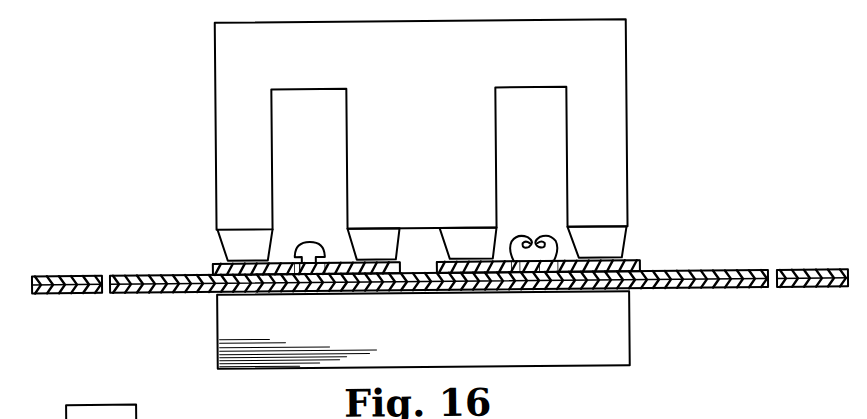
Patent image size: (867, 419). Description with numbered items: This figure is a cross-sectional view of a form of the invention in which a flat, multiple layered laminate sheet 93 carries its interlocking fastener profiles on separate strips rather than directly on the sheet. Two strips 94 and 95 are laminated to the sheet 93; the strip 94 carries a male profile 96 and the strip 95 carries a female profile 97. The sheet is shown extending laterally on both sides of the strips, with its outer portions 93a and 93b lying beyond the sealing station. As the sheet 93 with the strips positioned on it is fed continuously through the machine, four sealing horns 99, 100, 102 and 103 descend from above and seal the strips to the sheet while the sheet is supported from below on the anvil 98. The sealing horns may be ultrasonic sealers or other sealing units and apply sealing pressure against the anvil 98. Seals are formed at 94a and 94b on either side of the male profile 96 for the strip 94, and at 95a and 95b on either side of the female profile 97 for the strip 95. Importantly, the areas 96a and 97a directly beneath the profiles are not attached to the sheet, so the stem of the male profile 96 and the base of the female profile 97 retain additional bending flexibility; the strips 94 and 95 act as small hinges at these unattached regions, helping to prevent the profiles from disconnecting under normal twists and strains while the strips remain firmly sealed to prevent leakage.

The multiple layered laminate sheet 93 is at (718, 279).
The strip portion 93a is at (50, 291).
The strip portion 93b is at (840, 293).
The strip 94 is at (213, 264).
The seal 94a is at (233, 293).
The seal 94b is at (380, 295).
The strip 95 is at (640, 268).
The seal 95a is at (480, 292).
The seal 95b is at (600, 292).
The male profile 96 is at (310, 241).
The area beneath the male profile 96a is at (309, 294).
The female profile 97 is at (526, 238).
The area beneath the female profile 97a is at (531, 292).
The anvil 98 is at (630, 368).
The sealing horn 99 is at (218, 230).
The sealing horn 100 is at (368, 238).
The sealing horn 102 is at (466, 236).
The sealing horn 103 is at (627, 239).